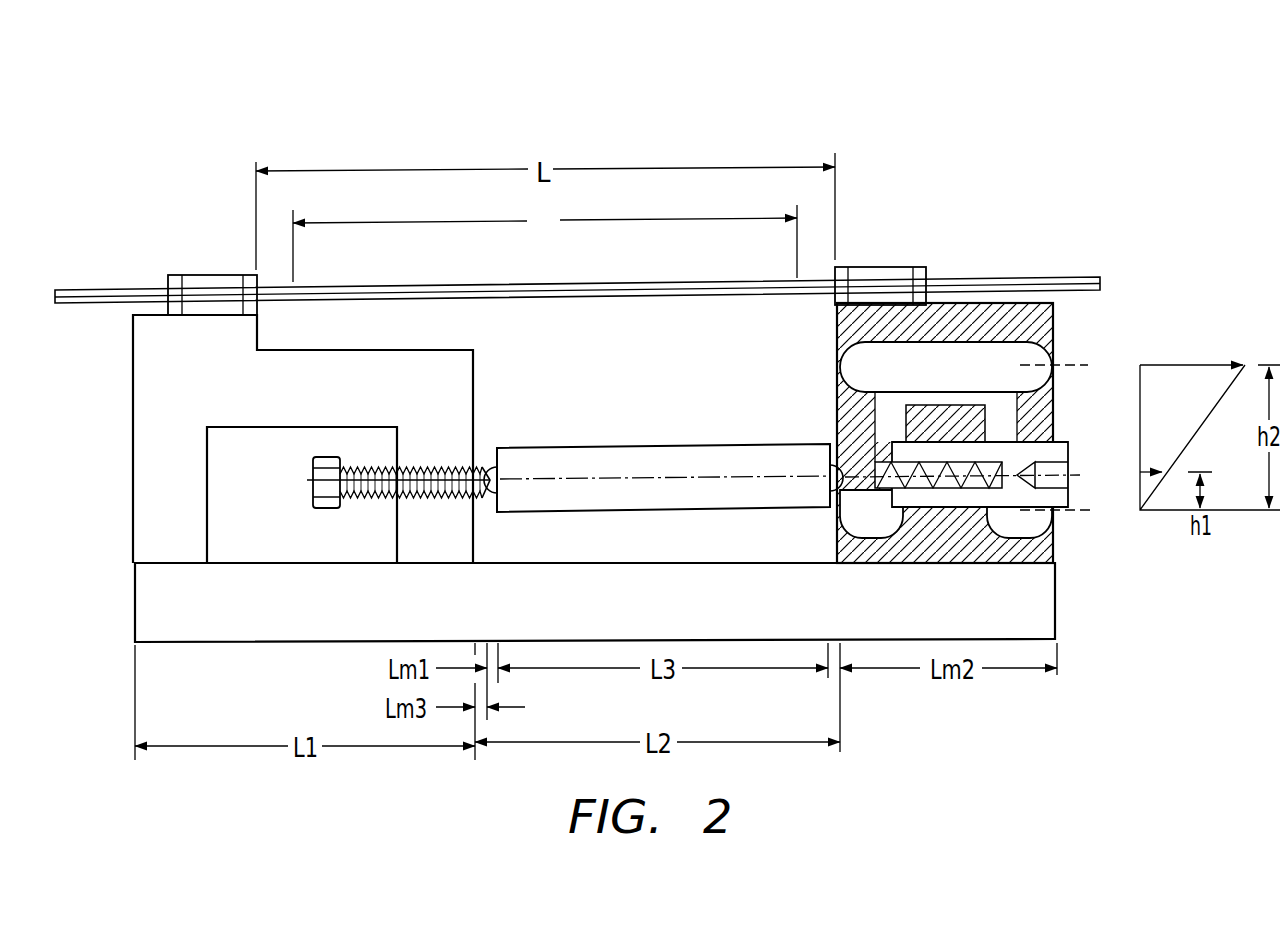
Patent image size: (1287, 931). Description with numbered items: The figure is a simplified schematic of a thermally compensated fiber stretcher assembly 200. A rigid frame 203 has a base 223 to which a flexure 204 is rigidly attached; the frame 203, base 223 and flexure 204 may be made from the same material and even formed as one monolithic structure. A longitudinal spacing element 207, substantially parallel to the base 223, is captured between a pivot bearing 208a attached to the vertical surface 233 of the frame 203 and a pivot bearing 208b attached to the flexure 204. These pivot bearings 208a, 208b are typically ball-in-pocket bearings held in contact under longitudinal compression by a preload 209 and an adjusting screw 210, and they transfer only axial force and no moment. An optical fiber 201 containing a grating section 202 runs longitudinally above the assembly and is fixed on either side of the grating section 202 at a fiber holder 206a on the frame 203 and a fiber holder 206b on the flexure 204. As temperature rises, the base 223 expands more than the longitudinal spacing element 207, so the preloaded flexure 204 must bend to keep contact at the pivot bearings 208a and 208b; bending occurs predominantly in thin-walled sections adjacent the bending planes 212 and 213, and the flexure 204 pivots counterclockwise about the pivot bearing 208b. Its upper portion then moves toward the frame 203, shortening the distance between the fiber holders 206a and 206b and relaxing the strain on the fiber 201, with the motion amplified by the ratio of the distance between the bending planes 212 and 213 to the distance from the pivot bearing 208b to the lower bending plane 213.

The thermally compensated fiber stretcher assembly 200 is at (873, 108).
The optical fiber 201 is at (95, 289).
The FBG section 202 is at (673, 296).
The rigid frame 203 is at (135, 402).
The flexure 204 is at (834, 334).
The fiber holder 206a is at (213, 275).
The fiber holder 206b is at (880, 267).
The longitudinal spacing element 207 is at (658, 443).
The pivot bearing 208a is at (488, 463).
The pivot bearing 208b is at (833, 455).
The preload 209 is at (1071, 435).
The adjusting screw 210 is at (380, 497).
The bending plane 212 is at (1073, 365).
The bending plane 213 is at (1075, 513).
The base 223 is at (135, 600).
The vertical surface 233 is at (475, 363).